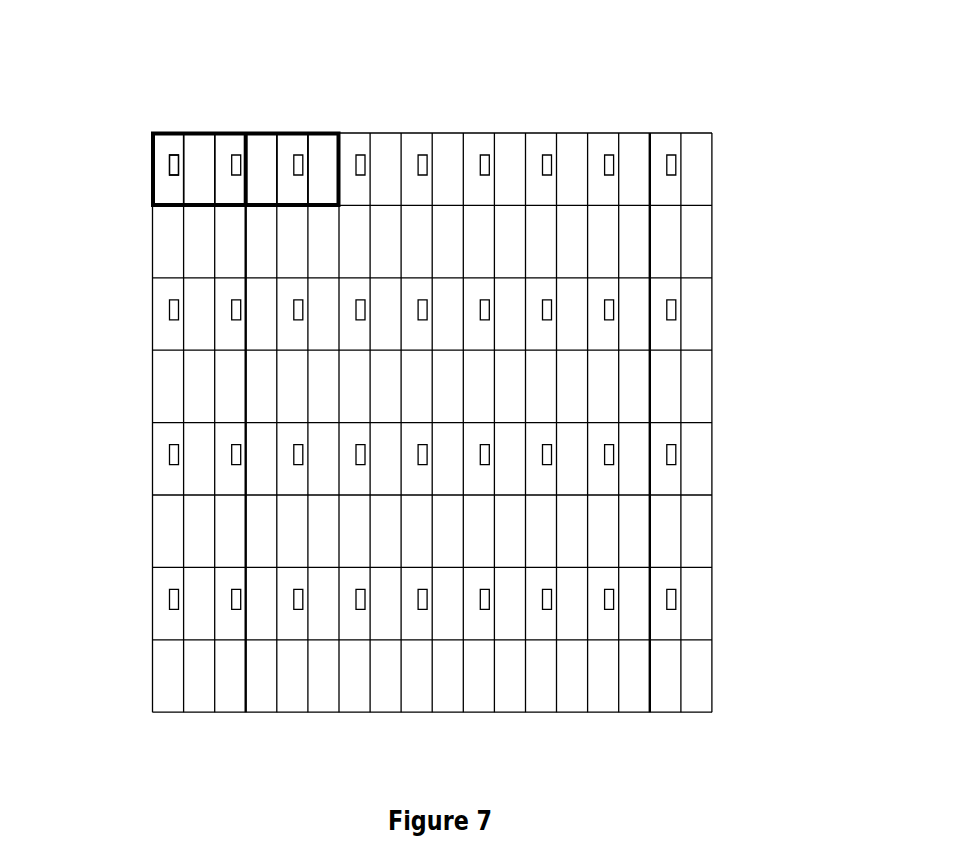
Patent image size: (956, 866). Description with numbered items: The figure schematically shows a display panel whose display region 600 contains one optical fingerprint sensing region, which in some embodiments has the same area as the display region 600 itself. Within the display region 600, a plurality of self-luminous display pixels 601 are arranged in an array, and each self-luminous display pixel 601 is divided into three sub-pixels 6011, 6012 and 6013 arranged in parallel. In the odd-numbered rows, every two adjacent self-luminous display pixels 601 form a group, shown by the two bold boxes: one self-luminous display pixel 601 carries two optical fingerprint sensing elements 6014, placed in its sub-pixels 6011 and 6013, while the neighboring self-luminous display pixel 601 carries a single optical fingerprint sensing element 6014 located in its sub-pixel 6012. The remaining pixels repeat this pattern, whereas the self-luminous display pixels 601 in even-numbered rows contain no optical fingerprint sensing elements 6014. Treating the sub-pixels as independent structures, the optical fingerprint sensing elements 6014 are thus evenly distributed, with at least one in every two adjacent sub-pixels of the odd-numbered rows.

The display region 600 is at (713, 188).
The self-luminous display pixel 601 is at (153, 132).
The sub-pixel 6011 is at (257, 150).
The sub-pixel 6012 is at (285, 152).
The sub-pixel 6013 is at (317, 152).
The optical fingerprint sensing element 6014 is at (170, 160).